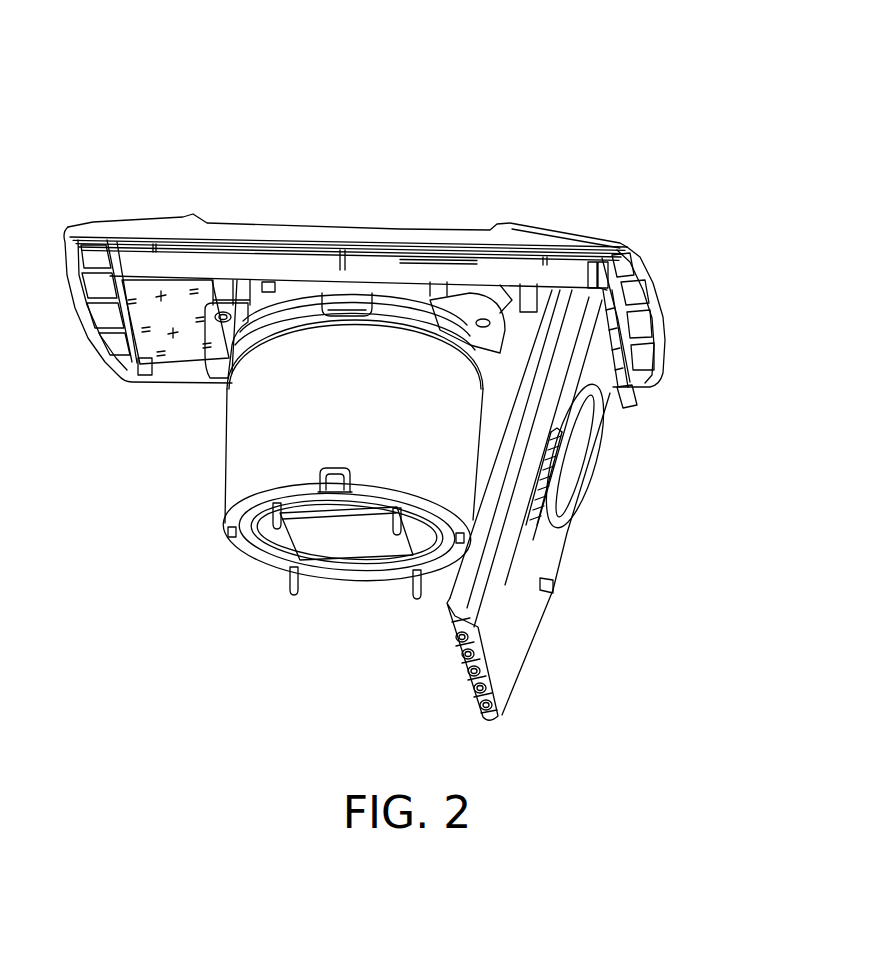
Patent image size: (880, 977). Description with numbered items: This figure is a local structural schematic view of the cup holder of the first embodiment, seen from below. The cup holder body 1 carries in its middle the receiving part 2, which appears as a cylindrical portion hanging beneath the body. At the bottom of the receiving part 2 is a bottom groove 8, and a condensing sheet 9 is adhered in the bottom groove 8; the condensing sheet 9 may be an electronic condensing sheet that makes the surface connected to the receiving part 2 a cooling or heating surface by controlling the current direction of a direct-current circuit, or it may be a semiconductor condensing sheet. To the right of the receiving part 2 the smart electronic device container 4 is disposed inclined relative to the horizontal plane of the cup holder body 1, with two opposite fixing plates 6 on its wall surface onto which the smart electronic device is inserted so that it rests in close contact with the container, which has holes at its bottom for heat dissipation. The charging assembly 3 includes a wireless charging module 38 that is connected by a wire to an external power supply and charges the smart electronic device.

The cup holder body 1 is at (338, 237).
The receiving part 2 is at (263, 400).
The charging assembly 3 is at (580, 562).
The smart electronic device container 4 is at (521, 589).
The fixing plates 6 is at (628, 395).
The bottom groove 8 is at (283, 532).
The condensing sheet 9 is at (352, 548).
The wireless charging module 38 is at (595, 460).